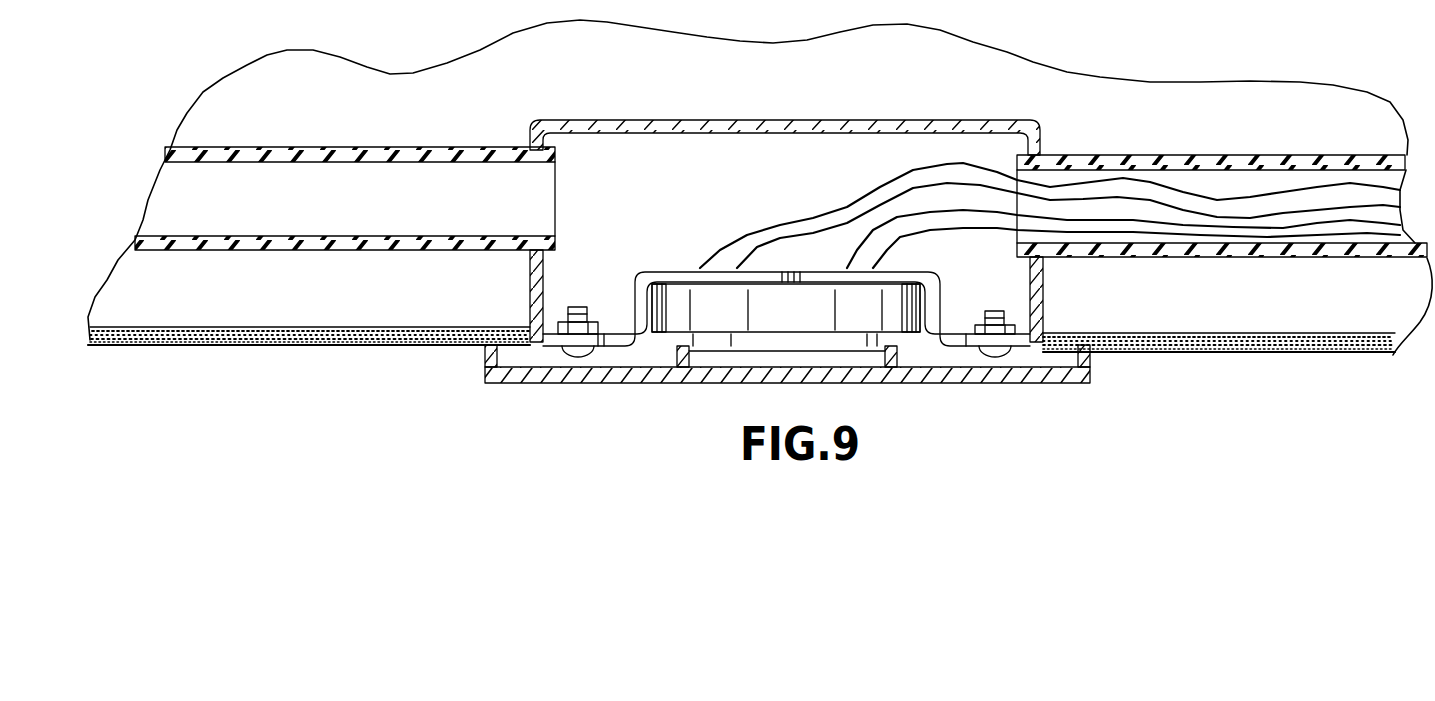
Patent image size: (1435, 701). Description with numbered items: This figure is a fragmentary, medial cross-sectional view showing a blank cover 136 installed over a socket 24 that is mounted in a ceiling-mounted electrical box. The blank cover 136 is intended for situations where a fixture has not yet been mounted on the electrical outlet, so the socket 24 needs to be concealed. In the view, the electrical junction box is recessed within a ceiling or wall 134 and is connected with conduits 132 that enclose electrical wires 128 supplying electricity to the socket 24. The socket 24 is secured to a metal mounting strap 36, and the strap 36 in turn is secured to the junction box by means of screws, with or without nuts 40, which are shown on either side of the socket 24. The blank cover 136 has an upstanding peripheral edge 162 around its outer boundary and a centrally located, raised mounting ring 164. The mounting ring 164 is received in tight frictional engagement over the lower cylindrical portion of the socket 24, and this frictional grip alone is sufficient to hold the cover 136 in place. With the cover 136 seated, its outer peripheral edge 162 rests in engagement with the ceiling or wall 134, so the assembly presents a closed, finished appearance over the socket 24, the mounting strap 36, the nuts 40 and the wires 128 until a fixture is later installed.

The socket 24 is at (683, 308).
The metal mounting strap 36 is at (662, 268).
The nuts 40 is at (580, 305).
The electrical wires 128 is at (845, 245).
The conduits 132 is at (1190, 156).
The ceiling or wall 134 is at (1228, 353).
The blank cover 136 is at (698, 130).
The peripheral edge 162 is at (1097, 352).
The mounting ring 164 is at (934, 384).